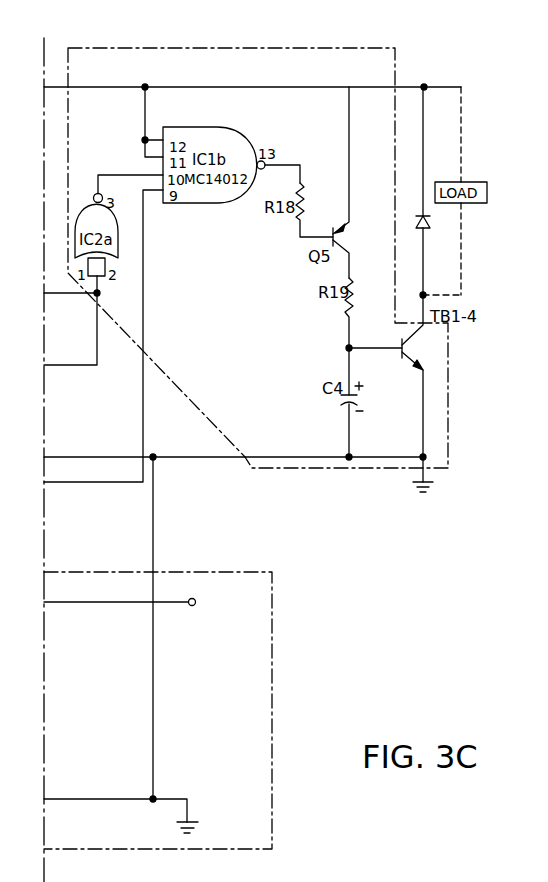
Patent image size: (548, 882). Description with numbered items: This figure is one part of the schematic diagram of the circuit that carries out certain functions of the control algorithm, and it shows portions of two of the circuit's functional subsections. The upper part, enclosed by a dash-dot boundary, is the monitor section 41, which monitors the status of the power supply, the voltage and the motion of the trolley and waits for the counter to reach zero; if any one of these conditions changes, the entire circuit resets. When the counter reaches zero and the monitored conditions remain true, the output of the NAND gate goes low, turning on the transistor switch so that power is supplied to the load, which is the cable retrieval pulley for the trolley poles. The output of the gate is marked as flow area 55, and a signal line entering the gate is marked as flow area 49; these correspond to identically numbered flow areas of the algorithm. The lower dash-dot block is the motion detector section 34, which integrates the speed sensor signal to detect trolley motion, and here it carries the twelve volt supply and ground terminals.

The monitor section 41 is at (129, 43).
The flow area 55 is at (324, 140).
The flow area 49 is at (145, 303).
The motion detector section 34 is at (230, 572).